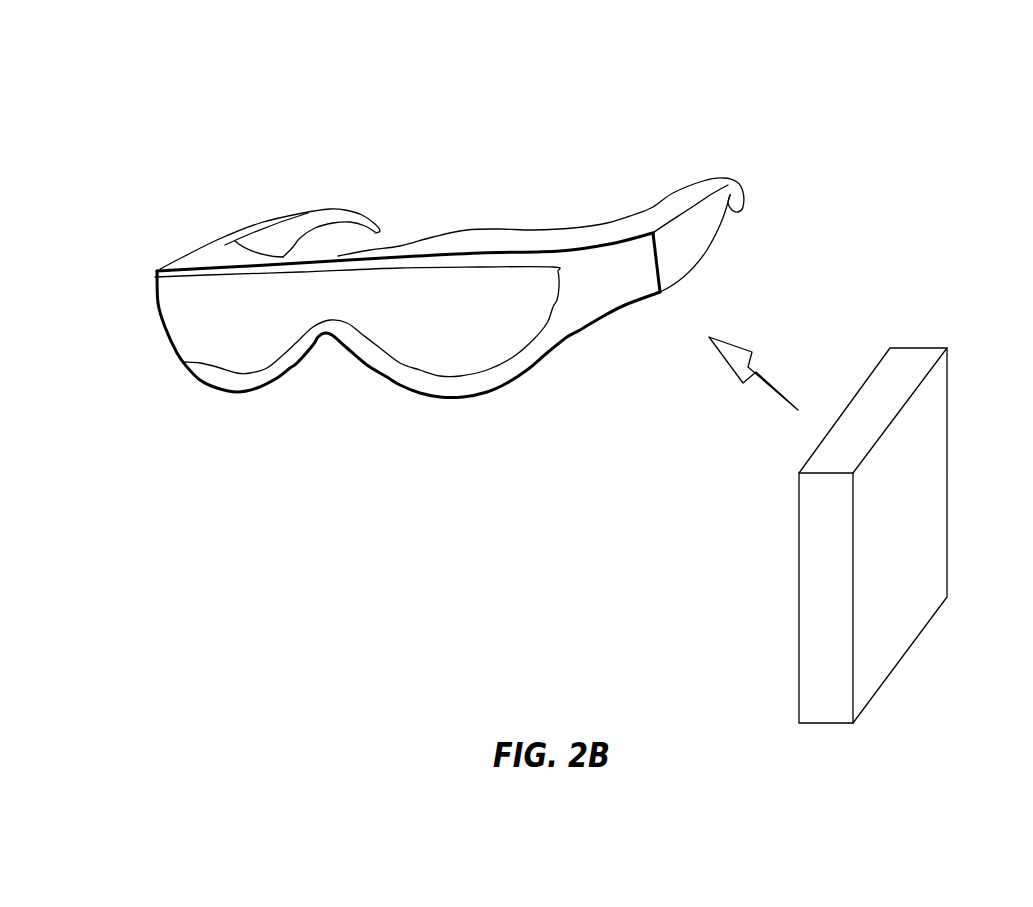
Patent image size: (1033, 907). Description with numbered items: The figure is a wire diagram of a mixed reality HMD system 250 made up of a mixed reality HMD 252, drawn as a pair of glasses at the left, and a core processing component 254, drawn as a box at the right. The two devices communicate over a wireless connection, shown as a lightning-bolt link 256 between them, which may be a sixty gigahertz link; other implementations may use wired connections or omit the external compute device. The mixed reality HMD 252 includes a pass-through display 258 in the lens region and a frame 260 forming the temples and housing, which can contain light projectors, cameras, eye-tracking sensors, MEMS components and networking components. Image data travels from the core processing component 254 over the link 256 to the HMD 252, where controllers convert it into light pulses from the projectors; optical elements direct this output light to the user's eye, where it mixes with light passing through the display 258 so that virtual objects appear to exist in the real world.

The mixed reality HMD system 250 is at (394, 218).
The mixed reality HMD 252 is at (155, 277).
The core processing component 254 is at (798, 537).
The link 256 is at (743, 383).
The pass-through display 258 is at (555, 267).
The frame 260 is at (688, 238).